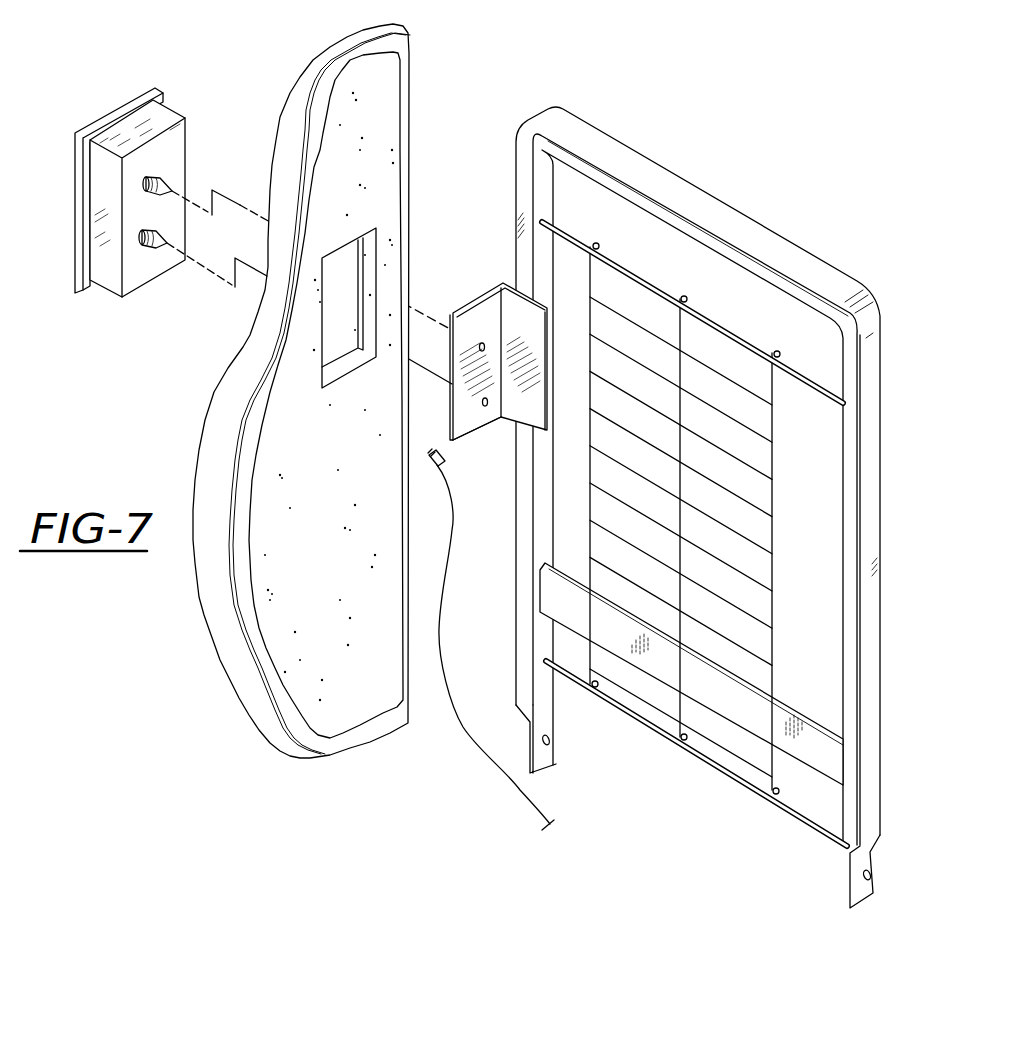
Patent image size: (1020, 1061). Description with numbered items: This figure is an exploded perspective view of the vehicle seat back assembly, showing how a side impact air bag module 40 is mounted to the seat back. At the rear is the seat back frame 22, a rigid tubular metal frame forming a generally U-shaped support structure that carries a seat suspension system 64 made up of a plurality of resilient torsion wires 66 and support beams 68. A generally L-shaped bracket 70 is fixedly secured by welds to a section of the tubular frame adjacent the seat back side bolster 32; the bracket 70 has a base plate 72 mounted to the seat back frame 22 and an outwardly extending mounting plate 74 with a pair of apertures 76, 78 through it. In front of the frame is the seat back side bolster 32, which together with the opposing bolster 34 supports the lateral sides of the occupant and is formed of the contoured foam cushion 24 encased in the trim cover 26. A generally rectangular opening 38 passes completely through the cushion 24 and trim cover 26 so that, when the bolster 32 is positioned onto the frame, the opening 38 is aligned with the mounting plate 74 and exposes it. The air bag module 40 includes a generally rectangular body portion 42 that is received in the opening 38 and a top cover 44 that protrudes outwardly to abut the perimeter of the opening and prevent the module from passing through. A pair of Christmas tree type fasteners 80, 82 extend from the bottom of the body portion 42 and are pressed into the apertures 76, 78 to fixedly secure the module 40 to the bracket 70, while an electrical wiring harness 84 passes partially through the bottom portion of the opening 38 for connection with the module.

The seat back frame 22 is at (806, 240).
The foam cushion 24 is at (390, 122).
The trim cover 26 is at (348, 735).
The bolster 32 is at (216, 663).
The bolster 34 is at (698, 158).
The opening 38 is at (323, 332).
The side impact air bag module 40 is at (142, 181).
The body portion 42 is at (158, 118).
The top cover 44 is at (67, 273).
The seat suspension system 64 is at (738, 633).
The torsion wires 66 is at (730, 427).
The support beams 68 is at (715, 319).
The bracket 70 is at (480, 348).
The base plate 72 is at (528, 323).
The mounting plate 74 is at (476, 425).
The aperture 76 is at (482, 347).
The aperture 78 is at (485, 402).
The fastener 80 is at (165, 188).
The fastener 82 is at (152, 243).
The electrical wiring harness 84 is at (500, 762).